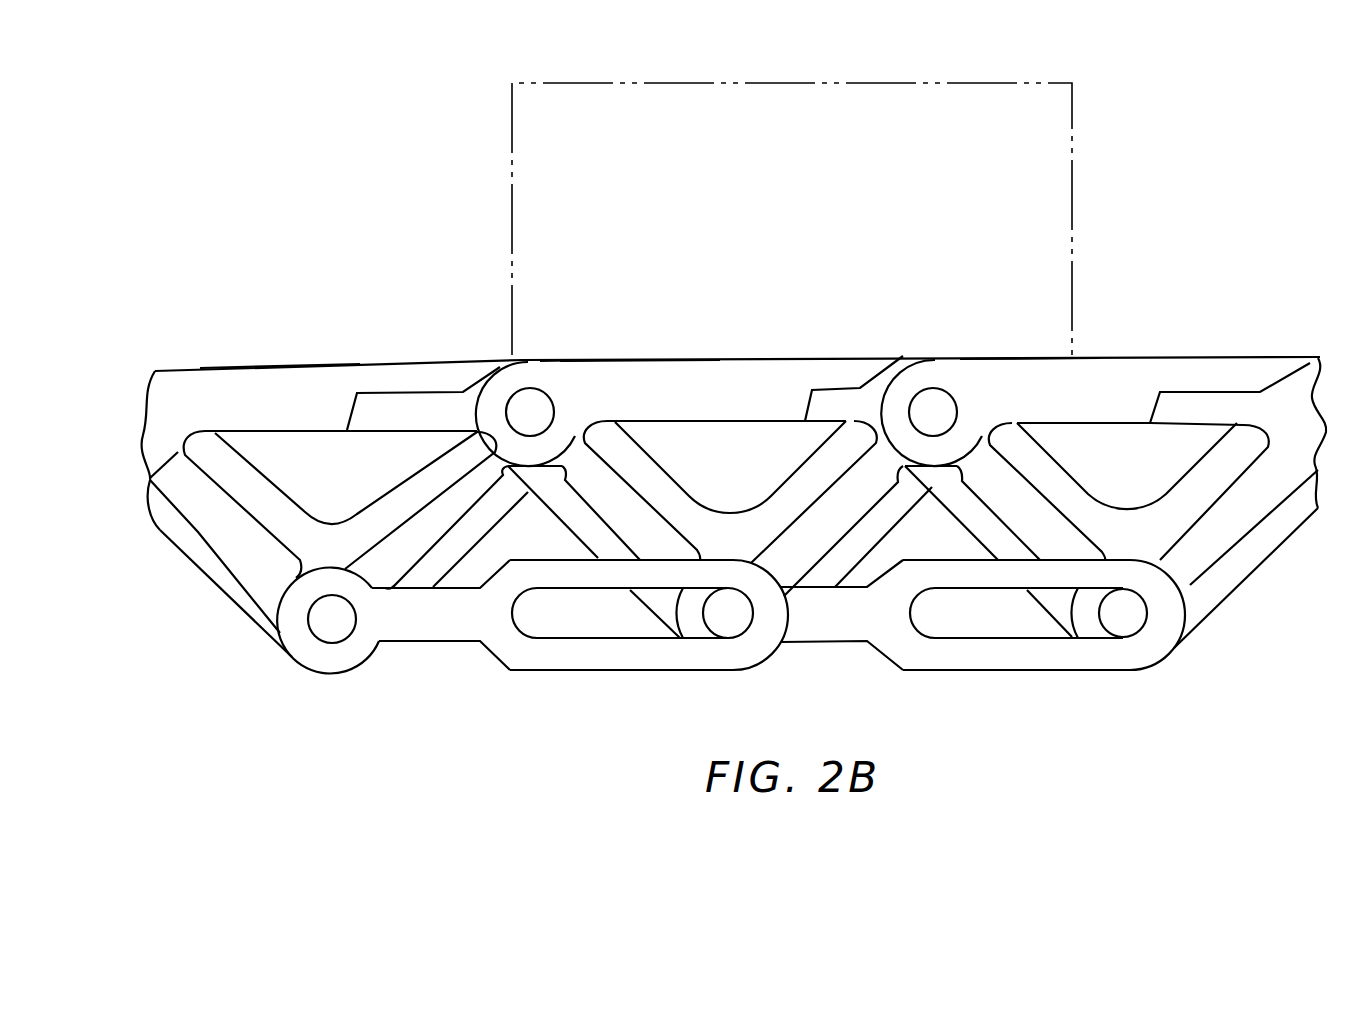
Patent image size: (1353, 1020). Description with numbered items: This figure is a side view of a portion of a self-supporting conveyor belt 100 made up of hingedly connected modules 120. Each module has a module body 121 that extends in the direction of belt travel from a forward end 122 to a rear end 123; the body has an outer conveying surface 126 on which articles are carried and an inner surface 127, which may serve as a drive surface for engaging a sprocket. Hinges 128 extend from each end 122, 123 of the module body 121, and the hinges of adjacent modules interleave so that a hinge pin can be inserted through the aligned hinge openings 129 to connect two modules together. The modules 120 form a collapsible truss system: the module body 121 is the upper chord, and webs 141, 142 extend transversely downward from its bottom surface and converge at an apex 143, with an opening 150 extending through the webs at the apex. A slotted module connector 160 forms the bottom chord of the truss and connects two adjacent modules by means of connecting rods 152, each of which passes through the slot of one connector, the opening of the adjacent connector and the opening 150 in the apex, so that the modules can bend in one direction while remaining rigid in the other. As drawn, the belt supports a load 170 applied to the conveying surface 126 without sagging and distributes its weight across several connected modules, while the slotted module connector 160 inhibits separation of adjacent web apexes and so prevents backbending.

The conveyor belt 100 is at (697, 330).
The module 120 is at (747, 357).
The module body 121 is at (286, 406).
The forward end 122 is at (452, 352).
The rear end 123 is at (586, 357).
The outer conveying surface 126 is at (286, 368).
The inner surface 127 is at (308, 432).
The hinge 128 is at (524, 366).
The hinge opening 129 is at (530, 413).
The web 141 is at (230, 552).
The web 142 is at (420, 565).
The apex 143 is at (289, 652).
The opening 150 is at (340, 630).
The connecting rod 152 is at (322, 618).
The slotted module connector 160 is at (718, 655).
The load 170 is at (667, 186).